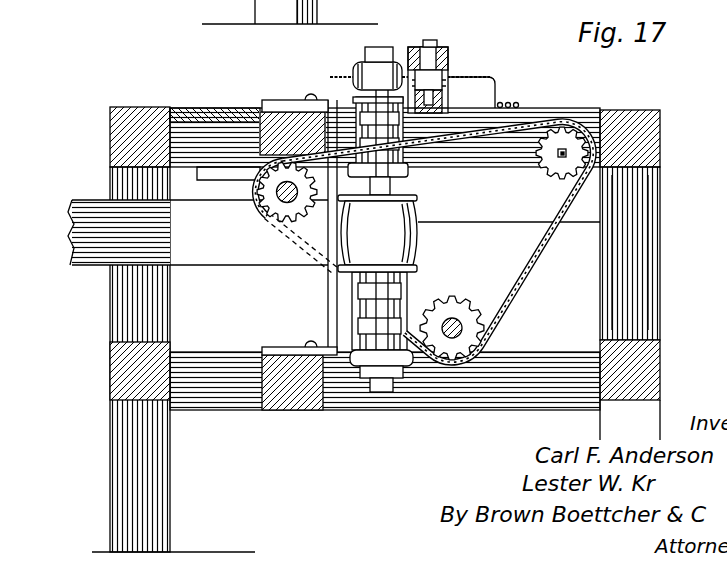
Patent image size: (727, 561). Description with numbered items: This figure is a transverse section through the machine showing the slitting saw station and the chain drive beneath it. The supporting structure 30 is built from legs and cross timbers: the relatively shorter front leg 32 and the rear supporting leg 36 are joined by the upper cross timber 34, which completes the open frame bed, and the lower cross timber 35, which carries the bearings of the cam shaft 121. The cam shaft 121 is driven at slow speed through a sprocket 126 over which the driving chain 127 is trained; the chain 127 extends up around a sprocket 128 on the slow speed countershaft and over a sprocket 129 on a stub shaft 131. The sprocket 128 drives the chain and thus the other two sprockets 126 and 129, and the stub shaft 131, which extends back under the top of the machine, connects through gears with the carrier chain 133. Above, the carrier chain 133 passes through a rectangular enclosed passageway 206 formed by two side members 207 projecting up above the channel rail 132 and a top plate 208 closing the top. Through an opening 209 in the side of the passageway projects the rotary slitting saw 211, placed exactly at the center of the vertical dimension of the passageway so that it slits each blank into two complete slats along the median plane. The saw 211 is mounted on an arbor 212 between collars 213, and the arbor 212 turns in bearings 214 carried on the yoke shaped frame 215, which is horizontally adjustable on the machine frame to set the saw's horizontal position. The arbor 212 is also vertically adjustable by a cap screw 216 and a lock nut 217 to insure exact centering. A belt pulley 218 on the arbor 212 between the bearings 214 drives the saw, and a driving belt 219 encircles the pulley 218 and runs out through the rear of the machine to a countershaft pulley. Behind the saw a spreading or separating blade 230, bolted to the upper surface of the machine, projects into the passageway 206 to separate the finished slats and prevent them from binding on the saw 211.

The supporting structure 30 is at (662, 285).
The front supporting leg 32 is at (652, 250).
The upper cross timber 34 is at (584, 118).
The lower cross timber 35 is at (520, 404).
The rear supporting leg 36 is at (122, 460).
The cam shaft 121 is at (462, 328).
The sprocket 126 is at (462, 312).
The driving chain 127 is at (500, 290).
The sprocket 128 is at (273, 196).
The sprocket 129 is at (286, 204).
The stub shaft 131 is at (556, 158).
The channel rail 132 is at (435, 103).
The carrier chain 133 is at (430, 110).
The enclosed passageway 206 is at (446, 90).
The side member 207 is at (448, 72).
The top plate 208 is at (447, 55).
The opening 209 is at (405, 70).
The rotary slitting saw 211 is at (358, 75).
The arbor 212 is at (432, 186).
The collar 213 is at (383, 78).
The bearing 214 is at (427, 159).
The yoke shaped frame 215 is at (328, 319).
The cap screw 216 is at (398, 390).
The lock nut 217 is at (403, 376).
The belt pulley 218 is at (418, 254).
The driving belt 219 is at (414, 237).
The separating blade 230 is at (492, 78).